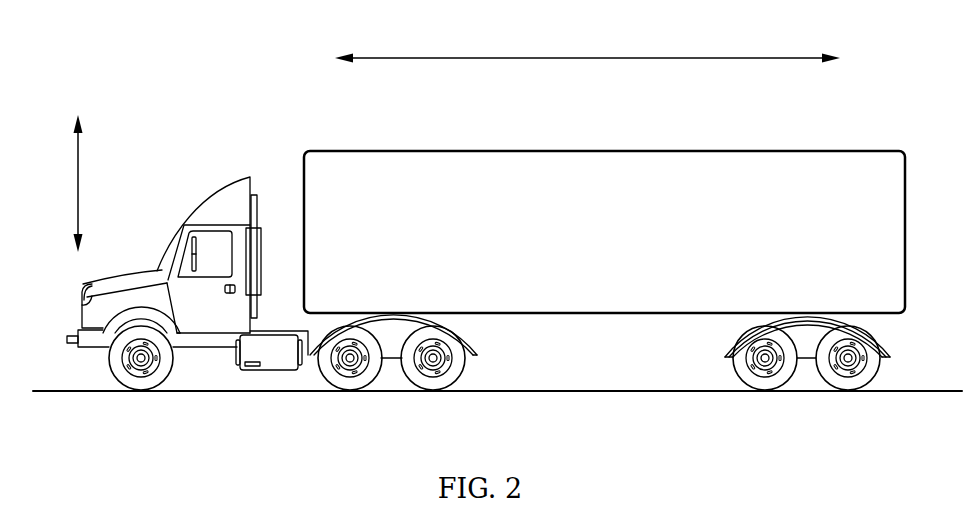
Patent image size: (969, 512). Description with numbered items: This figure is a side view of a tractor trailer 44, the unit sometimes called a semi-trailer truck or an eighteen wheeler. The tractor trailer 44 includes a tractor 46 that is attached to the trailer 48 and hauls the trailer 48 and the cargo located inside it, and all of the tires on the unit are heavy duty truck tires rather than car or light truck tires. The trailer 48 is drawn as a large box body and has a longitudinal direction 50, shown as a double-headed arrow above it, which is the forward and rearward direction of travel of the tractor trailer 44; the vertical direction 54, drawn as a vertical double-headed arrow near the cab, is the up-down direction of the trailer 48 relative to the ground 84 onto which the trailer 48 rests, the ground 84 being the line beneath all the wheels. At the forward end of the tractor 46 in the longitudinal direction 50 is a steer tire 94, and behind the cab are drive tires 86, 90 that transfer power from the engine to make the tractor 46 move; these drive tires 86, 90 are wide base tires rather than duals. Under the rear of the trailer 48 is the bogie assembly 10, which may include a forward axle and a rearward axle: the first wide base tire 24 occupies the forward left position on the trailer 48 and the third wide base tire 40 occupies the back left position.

The bogie assembly 10 is at (787, 438).
The first wide base tire 24 is at (765, 385).
The third wide base tire 40 is at (843, 385).
The tractor trailer 44 is at (604, 201).
The tractor 46 is at (223, 193).
The trailer 48 is at (735, 163).
The longitudinal direction 50 is at (598, 57).
The vertical direction 54 is at (78, 175).
The ground 84 is at (548, 384).
The drive tire 86 is at (350, 387).
The drive tire 90 is at (435, 387).
The steer tire 94 is at (143, 385).